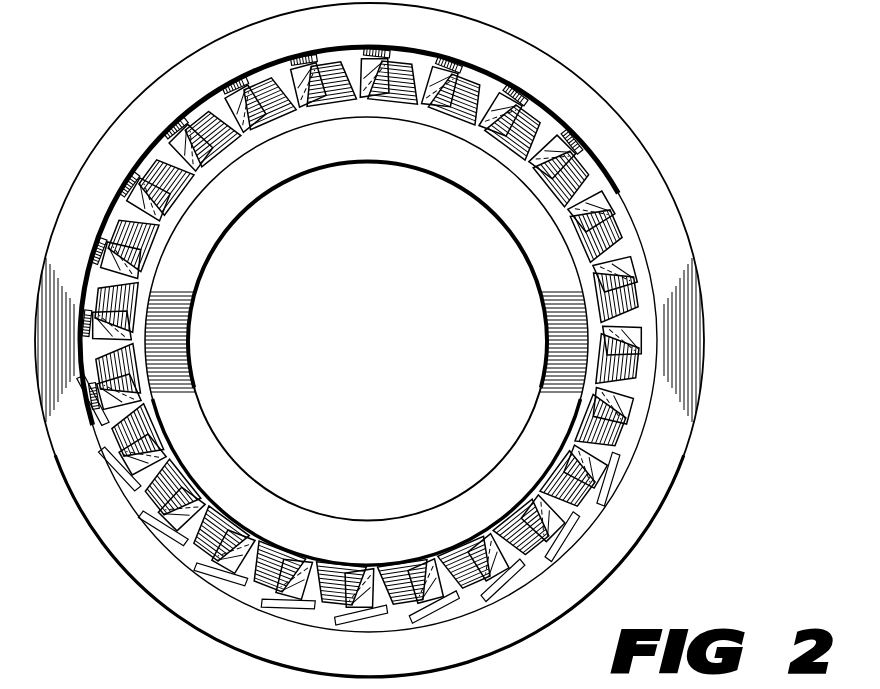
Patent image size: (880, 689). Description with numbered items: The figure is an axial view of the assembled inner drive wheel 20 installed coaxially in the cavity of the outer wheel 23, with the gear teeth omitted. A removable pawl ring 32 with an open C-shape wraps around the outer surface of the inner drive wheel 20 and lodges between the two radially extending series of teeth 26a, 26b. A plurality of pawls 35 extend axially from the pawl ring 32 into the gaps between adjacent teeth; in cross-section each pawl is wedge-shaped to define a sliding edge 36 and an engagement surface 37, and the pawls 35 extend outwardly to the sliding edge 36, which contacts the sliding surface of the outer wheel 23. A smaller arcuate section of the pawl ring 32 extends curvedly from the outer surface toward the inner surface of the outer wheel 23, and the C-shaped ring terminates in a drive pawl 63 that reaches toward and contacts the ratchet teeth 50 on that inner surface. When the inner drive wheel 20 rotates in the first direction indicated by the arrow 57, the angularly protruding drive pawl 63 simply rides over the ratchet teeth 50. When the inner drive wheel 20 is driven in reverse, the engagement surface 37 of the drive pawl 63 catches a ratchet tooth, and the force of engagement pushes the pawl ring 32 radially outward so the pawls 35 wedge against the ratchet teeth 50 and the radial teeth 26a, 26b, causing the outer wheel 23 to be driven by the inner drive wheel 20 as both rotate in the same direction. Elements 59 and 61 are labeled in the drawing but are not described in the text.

The inner drive wheel 20 is at (234, 202).
The outer wheel 23 is at (155, 95).
The first series of teeth 26a is at (258, 79).
The second series of teeth 26b is at (322, 62).
The pawl ring 32 is at (360, 77).
The pawls 35 is at (592, 228).
The sliding edge 36 is at (447, 49).
The engagement surface 37 is at (412, 59).
The ratchet teeth 50 is at (588, 165).
The arrow 57 is at (418, 139).
The cam surface 59 is at (592, 198).
The friction element 61 is at (142, 162).
The drive pawl 63 is at (104, 238).